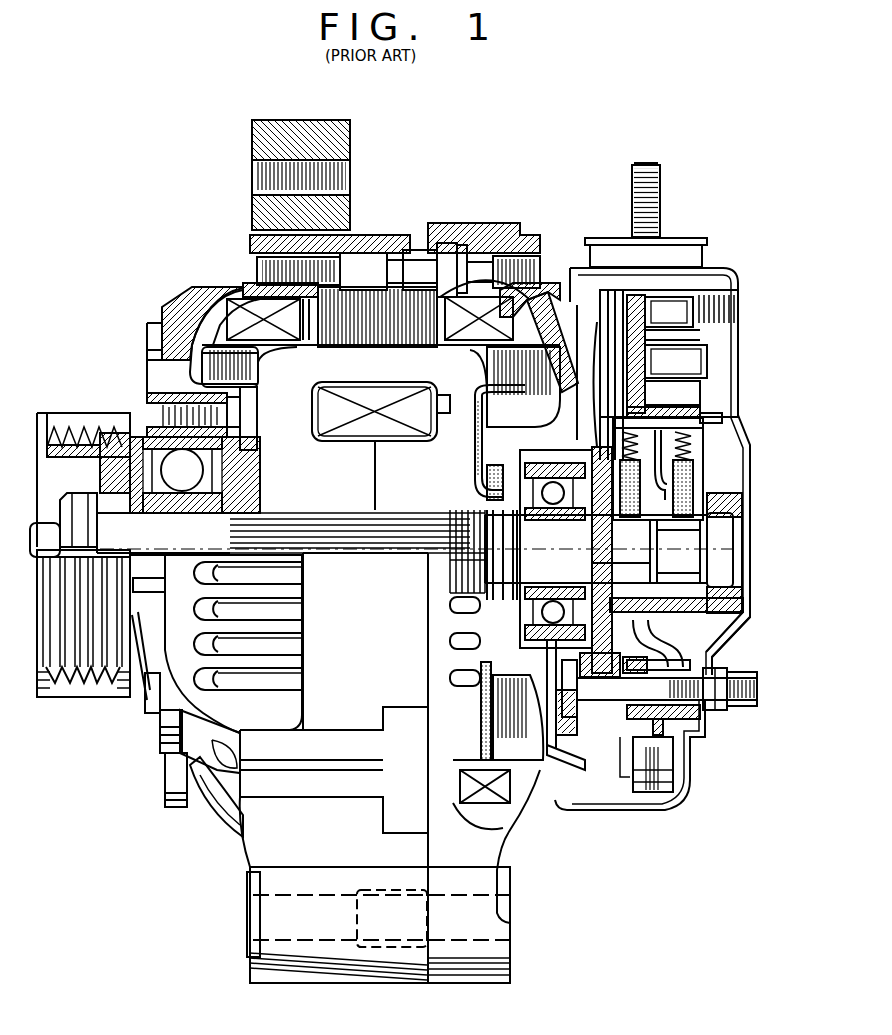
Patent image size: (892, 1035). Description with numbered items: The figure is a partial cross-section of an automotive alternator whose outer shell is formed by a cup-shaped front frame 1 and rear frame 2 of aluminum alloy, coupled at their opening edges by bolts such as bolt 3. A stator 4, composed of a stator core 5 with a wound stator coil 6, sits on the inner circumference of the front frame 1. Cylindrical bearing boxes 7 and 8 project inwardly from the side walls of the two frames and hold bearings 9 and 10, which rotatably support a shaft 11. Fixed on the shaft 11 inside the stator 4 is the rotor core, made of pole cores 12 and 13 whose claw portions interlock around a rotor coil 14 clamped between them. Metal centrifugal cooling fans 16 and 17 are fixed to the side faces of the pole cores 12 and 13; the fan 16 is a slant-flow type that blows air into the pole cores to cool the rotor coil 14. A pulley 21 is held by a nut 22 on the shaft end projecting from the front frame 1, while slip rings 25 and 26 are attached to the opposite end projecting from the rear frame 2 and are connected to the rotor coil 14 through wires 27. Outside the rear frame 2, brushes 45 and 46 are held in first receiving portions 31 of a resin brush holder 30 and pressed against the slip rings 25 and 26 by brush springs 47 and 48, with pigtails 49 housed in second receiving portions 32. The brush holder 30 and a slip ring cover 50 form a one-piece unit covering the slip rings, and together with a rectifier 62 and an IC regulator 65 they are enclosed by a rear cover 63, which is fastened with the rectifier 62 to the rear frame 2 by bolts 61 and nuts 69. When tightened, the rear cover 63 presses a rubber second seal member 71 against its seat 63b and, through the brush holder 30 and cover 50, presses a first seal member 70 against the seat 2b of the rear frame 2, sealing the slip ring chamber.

The front frame 1 is at (187, 300).
The rear frame 2 is at (485, 232).
The seat 2b is at (561, 410).
The bolt 3 is at (417, 263).
The stator 4 is at (390, 298).
The stator core 5 is at (338, 300).
The stator coil 6 is at (253, 320).
The bearing box 7 is at (150, 398).
The bearing box 8 is at (524, 467).
The bearing 9 is at (213, 448).
The bearing 10 is at (553, 660).
The shaft 11 is at (213, 527).
The pole core 12 is at (335, 490).
The pole core 13 is at (412, 488).
The rotor coil 14 is at (355, 410).
The centrifugal cooling fan 16 is at (217, 357).
The centrifugal cooling fan 17 is at (523, 355).
The pulley 21 is at (38, 530).
The nut 22 is at (68, 465).
The slip ring 25 is at (630, 544).
The slip ring 26 is at (707, 590).
The wires 27 is at (481, 446).
The brush holder 30 is at (700, 390).
The first receiving portion 31 is at (670, 313).
The second receiving portion 32 is at (693, 357).
The brush 45 is at (707, 477).
The brush 46 is at (627, 510).
The brush spring 47 is at (702, 440).
The brush spring 48 is at (632, 437).
The pigtail 49 is at (715, 420).
The slip ring cover 50 is at (752, 688).
The bolt 61 is at (737, 703).
The rectifier 62 is at (740, 702).
The rear cover 63 is at (647, 815).
The seat 63b is at (725, 625).
The IC regulator 65 is at (650, 430).
The nut 69 is at (713, 710).
The first seal member 70 is at (598, 450).
The second seal member 71 is at (725, 512).